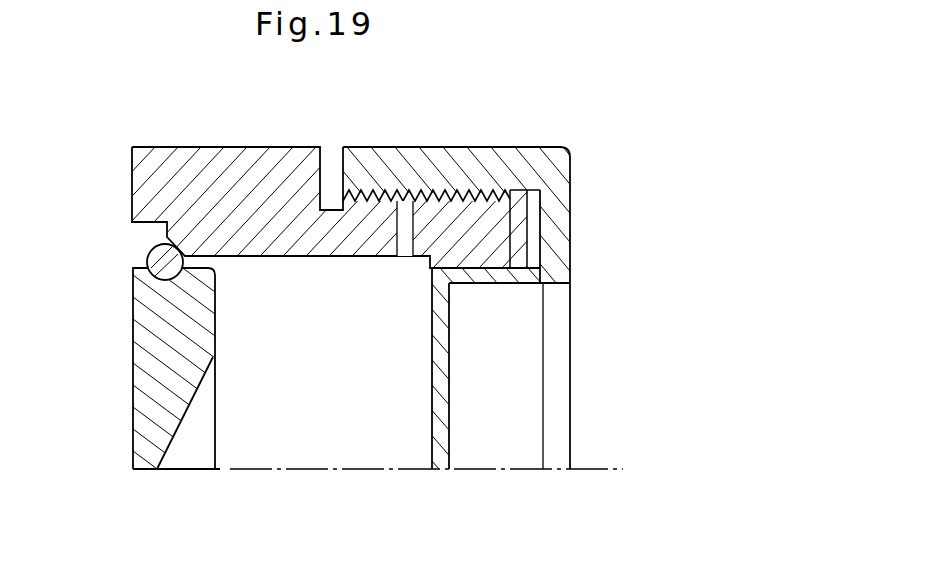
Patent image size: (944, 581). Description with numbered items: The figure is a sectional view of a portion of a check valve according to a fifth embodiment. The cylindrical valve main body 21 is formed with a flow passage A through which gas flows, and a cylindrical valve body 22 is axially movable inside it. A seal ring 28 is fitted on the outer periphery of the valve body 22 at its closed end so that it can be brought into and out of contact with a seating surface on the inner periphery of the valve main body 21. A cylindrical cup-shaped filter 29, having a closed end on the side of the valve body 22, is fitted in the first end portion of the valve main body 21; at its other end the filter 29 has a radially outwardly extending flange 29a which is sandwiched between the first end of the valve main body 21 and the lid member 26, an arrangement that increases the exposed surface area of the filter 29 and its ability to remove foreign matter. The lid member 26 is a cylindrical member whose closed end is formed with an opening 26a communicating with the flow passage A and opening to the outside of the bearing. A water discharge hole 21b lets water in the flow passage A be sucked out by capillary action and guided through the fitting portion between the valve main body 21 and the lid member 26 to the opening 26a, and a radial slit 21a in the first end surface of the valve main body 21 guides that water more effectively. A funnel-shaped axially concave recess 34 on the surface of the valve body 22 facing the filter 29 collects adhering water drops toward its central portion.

The valve main body 21 is at (213, 183).
The radial slit 21a is at (512, 213).
The water discharge hole 21b is at (403, 220).
The valve body 22 is at (152, 352).
The lid member 26 is at (462, 173).
The opening 26a is at (553, 285).
The seal ring 28 is at (148, 257).
The filter 29 is at (440, 397).
The flange 29a is at (535, 217).
The recess 34 is at (202, 400).
The flow passage A is at (275, 375).